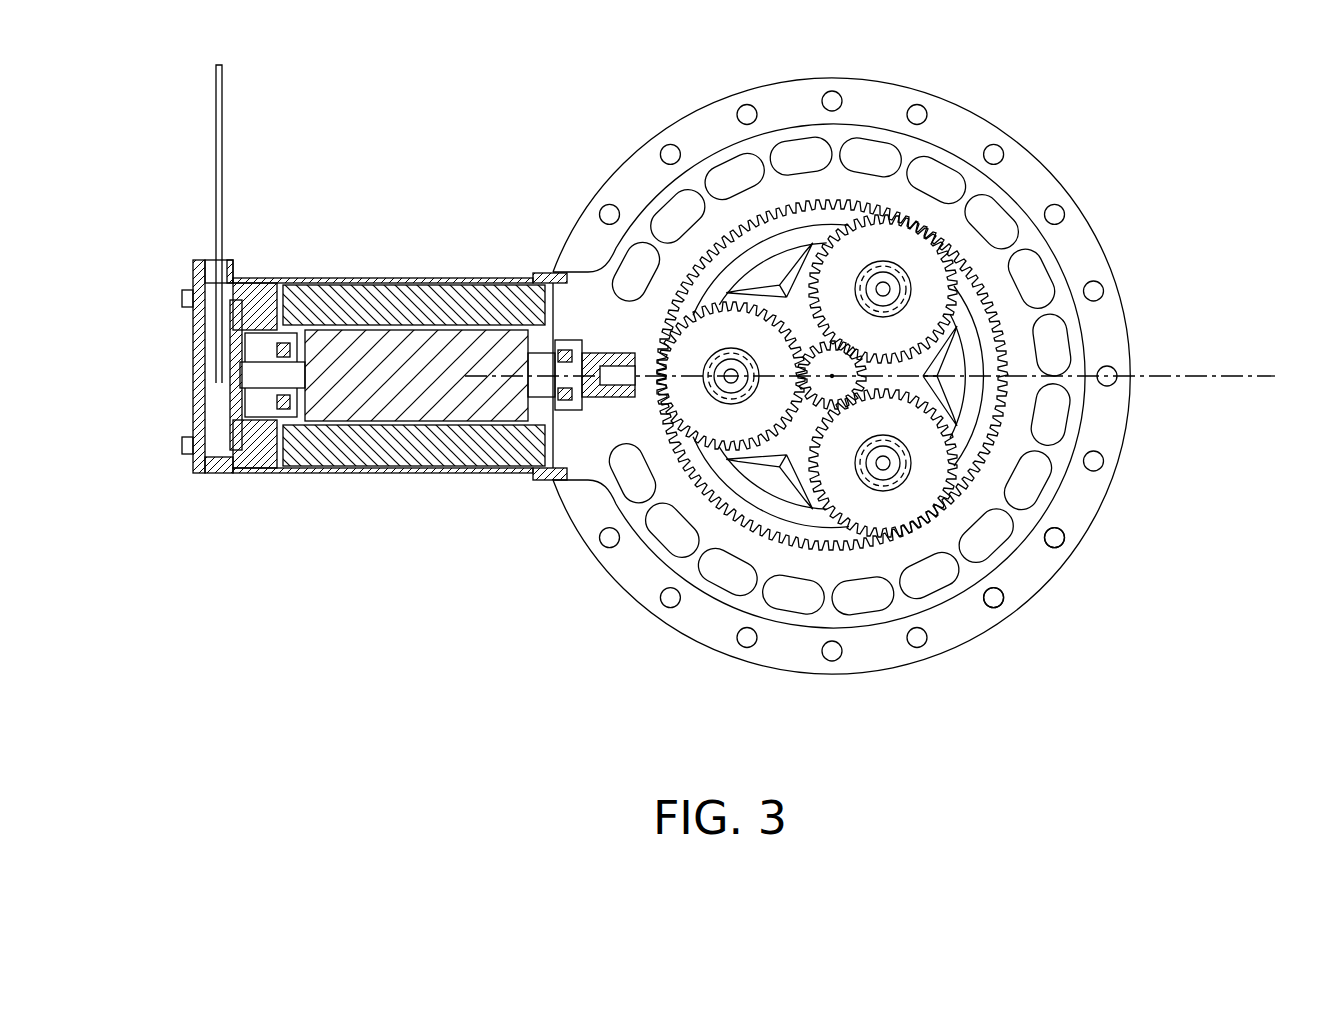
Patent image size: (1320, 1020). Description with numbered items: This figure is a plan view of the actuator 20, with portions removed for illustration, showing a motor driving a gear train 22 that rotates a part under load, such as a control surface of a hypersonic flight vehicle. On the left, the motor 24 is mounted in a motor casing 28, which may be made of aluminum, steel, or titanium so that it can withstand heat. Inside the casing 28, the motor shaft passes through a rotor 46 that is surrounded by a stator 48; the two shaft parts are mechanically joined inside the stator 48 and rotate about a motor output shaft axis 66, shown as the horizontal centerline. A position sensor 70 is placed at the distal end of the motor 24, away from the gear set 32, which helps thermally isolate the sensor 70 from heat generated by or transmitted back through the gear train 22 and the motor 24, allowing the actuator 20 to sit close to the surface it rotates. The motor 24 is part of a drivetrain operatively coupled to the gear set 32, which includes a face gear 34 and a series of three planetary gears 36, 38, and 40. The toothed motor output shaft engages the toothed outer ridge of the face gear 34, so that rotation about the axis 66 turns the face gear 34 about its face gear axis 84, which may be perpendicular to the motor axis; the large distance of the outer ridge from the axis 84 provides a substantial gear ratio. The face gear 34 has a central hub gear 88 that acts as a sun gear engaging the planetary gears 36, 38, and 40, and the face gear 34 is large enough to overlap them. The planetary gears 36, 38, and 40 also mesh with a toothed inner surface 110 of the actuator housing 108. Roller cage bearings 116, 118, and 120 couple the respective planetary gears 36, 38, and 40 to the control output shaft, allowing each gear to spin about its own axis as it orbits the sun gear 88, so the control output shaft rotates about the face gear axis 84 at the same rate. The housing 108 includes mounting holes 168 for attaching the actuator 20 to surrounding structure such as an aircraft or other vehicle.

The actuator 20 is at (483, 176).
The gear train 22 is at (541, 500).
The motor 24 is at (340, 473).
The motor casing 28 is at (370, 279).
The gear set 32 is at (988, 404).
The face gear 34 is at (928, 378).
The planetary gear 36 is at (695, 332).
The planetary gear 38 is at (940, 205).
The planetary gear 40 is at (900, 500).
The rotor 46 is at (392, 411).
The stator 48 is at (428, 297).
The motor output shaft axis 66 is at (1230, 376).
The position sensor 70 is at (240, 368).
The face gear axis 84 is at (843, 350).
The central hub gear 88 is at (925, 263).
The housing 108 is at (810, 565).
The toothed inner surface 110 is at (884, 289).
The roller cage bearing 116 is at (735, 385).
The roller cage bearing 118 is at (953, 277).
The roller cage bearing 120 is at (910, 458).
The mounting holes 168 is at (998, 598).